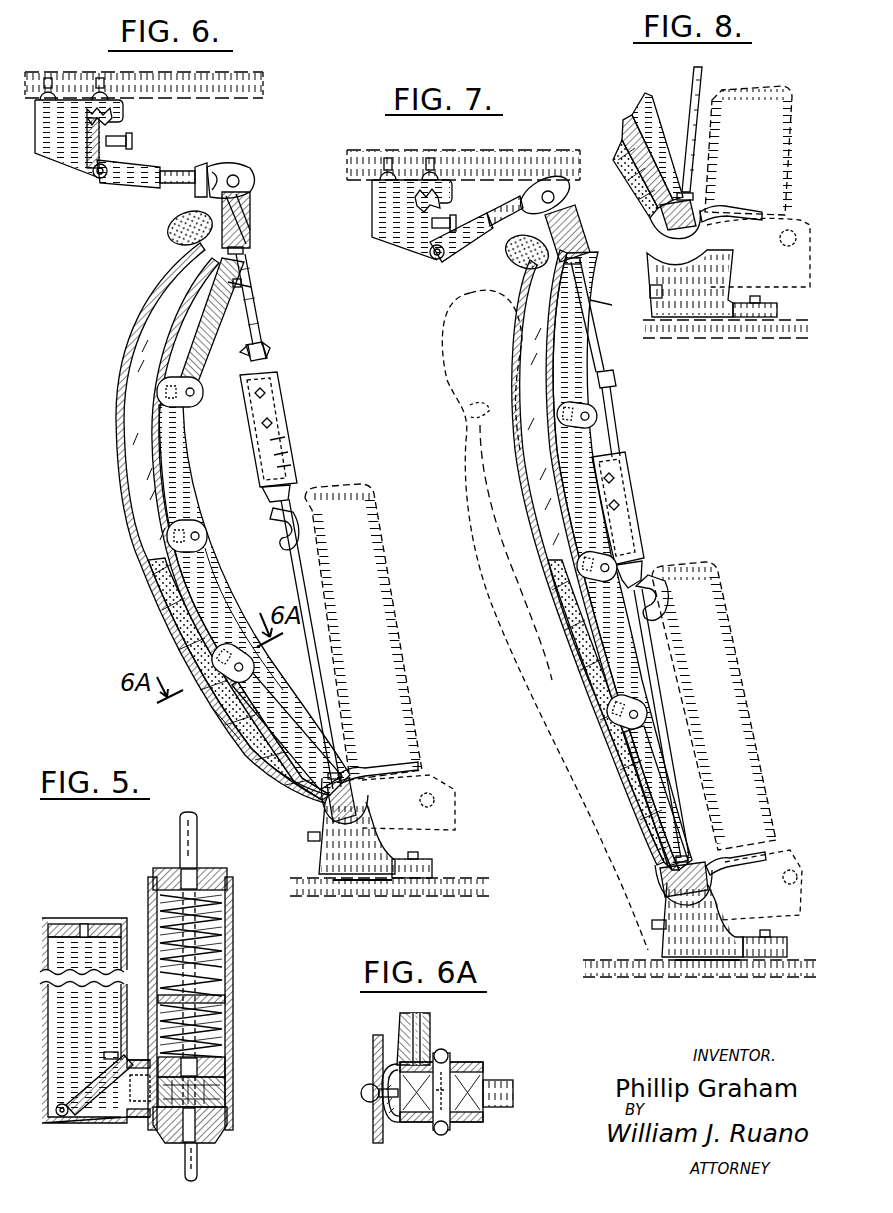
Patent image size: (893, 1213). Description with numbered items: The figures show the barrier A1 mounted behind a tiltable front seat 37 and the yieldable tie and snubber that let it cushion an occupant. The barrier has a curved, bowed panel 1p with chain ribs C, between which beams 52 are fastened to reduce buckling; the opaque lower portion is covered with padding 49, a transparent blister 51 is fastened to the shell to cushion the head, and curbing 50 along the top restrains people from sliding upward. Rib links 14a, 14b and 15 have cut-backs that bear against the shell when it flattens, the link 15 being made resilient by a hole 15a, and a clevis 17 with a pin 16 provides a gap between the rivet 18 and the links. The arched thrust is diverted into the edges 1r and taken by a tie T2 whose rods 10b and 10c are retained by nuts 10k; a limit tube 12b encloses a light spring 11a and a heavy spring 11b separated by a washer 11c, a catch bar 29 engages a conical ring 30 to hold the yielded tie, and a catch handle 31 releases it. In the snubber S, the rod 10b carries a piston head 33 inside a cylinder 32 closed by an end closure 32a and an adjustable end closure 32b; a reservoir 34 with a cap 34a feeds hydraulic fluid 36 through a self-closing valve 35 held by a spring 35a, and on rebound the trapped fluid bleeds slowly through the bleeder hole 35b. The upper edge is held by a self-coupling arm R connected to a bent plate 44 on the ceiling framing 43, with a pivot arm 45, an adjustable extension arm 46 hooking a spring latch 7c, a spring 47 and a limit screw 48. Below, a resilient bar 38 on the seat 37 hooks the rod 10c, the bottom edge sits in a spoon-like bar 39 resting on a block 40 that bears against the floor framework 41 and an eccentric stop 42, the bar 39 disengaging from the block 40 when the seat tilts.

In FIG. 6, the auto body ceiling framing 43 is at (243, 93).
In FIG. 7, the auto body ceiling framing 43 is at (507, 160).
In FIG. 6, the bent plate 44 is at (56, 162).
In FIG. 6, the pivot arm 45 is at (137, 188).
In FIG. 6, the adjustable extension arm 46 is at (184, 177).
In FIG. 6, the spring 47 is at (118, 119).
In FIG. 6, the adjustable limit screw 48 is at (131, 143).
In FIG. 6, the spring latch 7c is at (233, 170).
In FIG. 6, the edge 1r is at (240, 224).
In FIG. 6, the edge padding or curbing 50 is at (174, 240).
In FIG. 6, the nut 10k is at (244, 251).
In FIG. 6, the rod 10b is at (247, 264).
In FIG. 5, the rod 10b is at (180, 828).
In FIG. 6, the catch handle 31 is at (251, 284).
In FIG. 6, the conical ring 30 is at (266, 350).
In FIG. 6, the spring steel catch bar 29 is at (273, 407).
In FIG. 6, the limit tube 12b is at (278, 448).
In FIG. 6, the transparent shell or blister 51 is at (114, 386).
In FIG. 6, the panel 1p is at (155, 458).
In FIG. 6A, the panel 1p is at (373, 1128).
In FIG. 6, the padding 49 is at (163, 628).
In FIG. 6, the rib link 14b is at (177, 452).
In FIG. 6, the rib link 14a is at (190, 582).
In FIG. 6A, the rib link 14a is at (473, 1090).
In FIG. 6, the hole or eye 15a is at (200, 328).
In FIG. 6, the link 15 is at (194, 358).
In FIG. 6A, the link 15 is at (505, 1108).
In FIG. 6, the beam or rib 52 is at (184, 410).
In FIG. 6A, the beam or rib 52 is at (430, 1038).
In FIG. 6, the chain rib C is at (222, 529).
In FIG. 6, the resilient bar 38 is at (276, 514).
In FIG. 6, the rod 10c is at (290, 567).
In FIG. 5, the rod 10c is at (184, 1165).
In FIG. 6, the front seat 37 is at (351, 493).
In FIG. 7, the front seat 37 is at (708, 566).
In FIG. 8, the front seat 37 is at (763, 97).
In FIG. 6, the spoon-like resilient bar 39 is at (418, 770).
In FIG. 8, the spoon-like resilient bar 39 is at (737, 210).
In FIG. 6, the bearing block or stool 40 is at (365, 880).
In FIG. 7, the bearing block or stool 40 is at (710, 962).
In FIG. 8, the bearing block or stool 40 is at (690, 320).
In FIG. 6, the eccentric pivoted disk stop 42 is at (420, 880).
In FIG. 7, the eccentric pivoted disk stop 42 is at (775, 962).
In FIG. 6, the auto body floor framework 41 is at (480, 896).
In FIG. 7, the auto body floor framework 41 is at (628, 975).
In FIG. 6, the clevis 17 is at (208, 712).
In FIG. 6A, the clevis 17 is at (408, 1127).
In FIG. 6, the barrier A1 is at (123, 599).
In FIG. 6, the tie T2 is at (297, 648).
In FIG. 5, the tie T2 is at (126, 832).
In FIG. 6, the self-coupling arm R is at (105, 208).
In FIG. 7, the self-coupling arm R is at (456, 275).
In FIG. 6A, the pin 16 is at (441, 1135).
In FIG. 6A, the rivet 18 is at (365, 1088).
In FIG. 5, the adjustable end closure 32b is at (177, 868).
In FIG. 5, the cylinder 32 is at (233, 1006).
In FIG. 5, the heavy spring 11b is at (226, 945).
In FIG. 5, the washer 11c is at (226, 985).
In FIG. 5, the light spring 11a is at (226, 1025).
In FIG. 5, the piston head 33 is at (226, 1050).
In FIG. 5, the hydraulic fluid 36 is at (226, 1088).
In FIG. 5, the end closure 32a is at (212, 1143).
In FIG. 5, the hydraulic fluid reservoir 34 is at (44, 920).
In FIG. 5, the reservoir cap 34a is at (100, 924).
In FIG. 5, the self-closing valve 35 is at (90, 1090).
In FIG. 5, the bleeder hole 35b is at (108, 1059).
In FIG. 5, the spring 35a is at (68, 1114).
In FIG. 5, the snubber S is at (250, 1115).